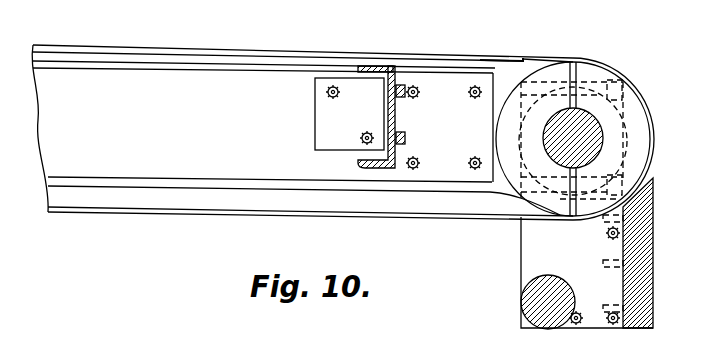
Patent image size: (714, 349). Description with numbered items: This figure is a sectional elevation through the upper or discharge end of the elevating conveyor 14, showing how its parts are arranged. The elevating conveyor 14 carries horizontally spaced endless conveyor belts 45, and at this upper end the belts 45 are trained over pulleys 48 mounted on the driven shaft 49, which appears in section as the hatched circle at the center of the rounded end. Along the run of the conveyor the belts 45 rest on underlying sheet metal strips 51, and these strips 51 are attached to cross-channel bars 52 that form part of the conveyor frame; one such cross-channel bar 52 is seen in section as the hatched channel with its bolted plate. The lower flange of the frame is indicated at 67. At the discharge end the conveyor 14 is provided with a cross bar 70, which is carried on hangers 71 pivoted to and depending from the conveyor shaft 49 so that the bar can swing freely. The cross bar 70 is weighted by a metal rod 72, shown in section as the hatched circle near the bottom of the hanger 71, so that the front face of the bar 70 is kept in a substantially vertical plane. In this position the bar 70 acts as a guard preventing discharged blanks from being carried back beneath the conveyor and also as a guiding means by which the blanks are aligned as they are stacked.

The elevating conveyor 14 is at (183, 45).
The endless conveyor belts 45 is at (548, 58).
The pulleys 48 is at (637, 142).
The driven shaft 49 is at (588, 126).
The sheet metal strips 51 is at (501, 62).
The cross-channel bars 52 is at (397, 117).
The lower rail flange 67 is at (217, 161).
The cross bar 70 is at (655, 241).
The hangers 71 is at (535, 254).
The metal rod 72 is at (538, 304).